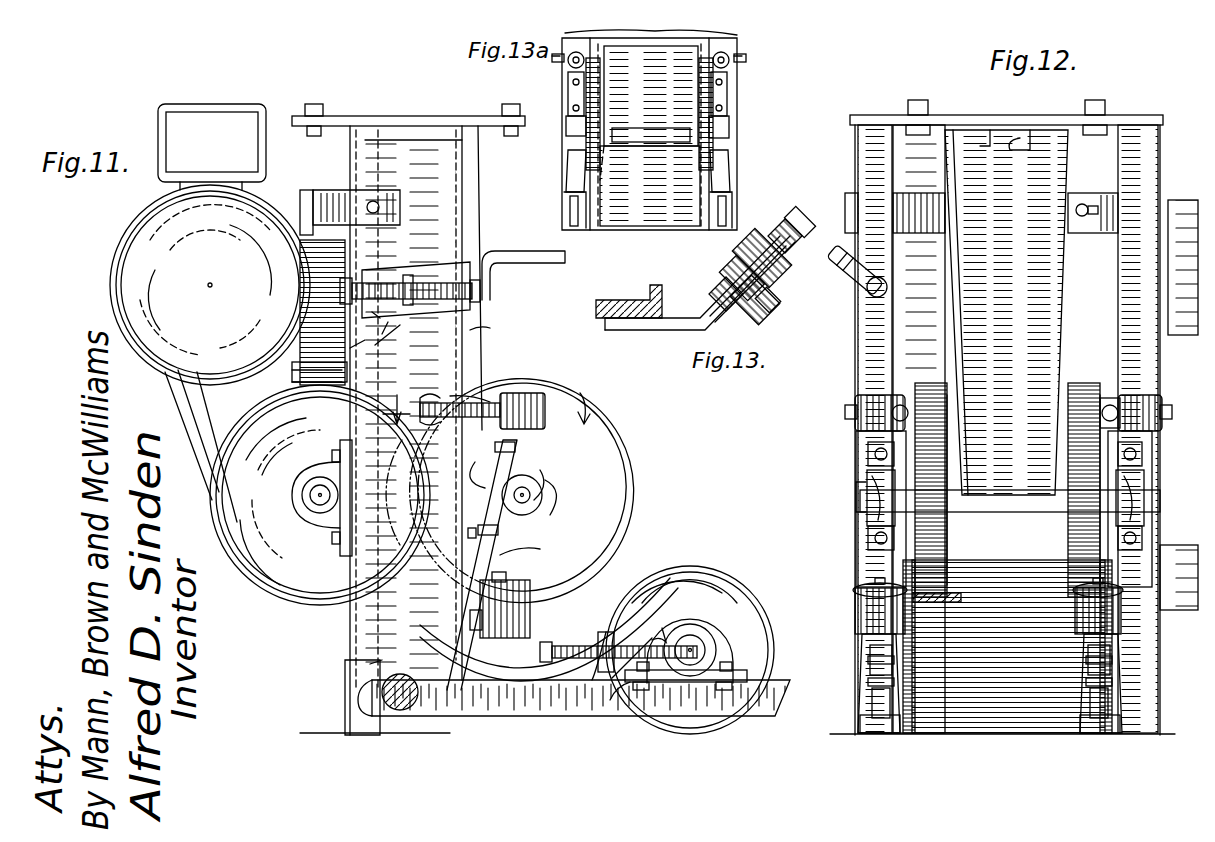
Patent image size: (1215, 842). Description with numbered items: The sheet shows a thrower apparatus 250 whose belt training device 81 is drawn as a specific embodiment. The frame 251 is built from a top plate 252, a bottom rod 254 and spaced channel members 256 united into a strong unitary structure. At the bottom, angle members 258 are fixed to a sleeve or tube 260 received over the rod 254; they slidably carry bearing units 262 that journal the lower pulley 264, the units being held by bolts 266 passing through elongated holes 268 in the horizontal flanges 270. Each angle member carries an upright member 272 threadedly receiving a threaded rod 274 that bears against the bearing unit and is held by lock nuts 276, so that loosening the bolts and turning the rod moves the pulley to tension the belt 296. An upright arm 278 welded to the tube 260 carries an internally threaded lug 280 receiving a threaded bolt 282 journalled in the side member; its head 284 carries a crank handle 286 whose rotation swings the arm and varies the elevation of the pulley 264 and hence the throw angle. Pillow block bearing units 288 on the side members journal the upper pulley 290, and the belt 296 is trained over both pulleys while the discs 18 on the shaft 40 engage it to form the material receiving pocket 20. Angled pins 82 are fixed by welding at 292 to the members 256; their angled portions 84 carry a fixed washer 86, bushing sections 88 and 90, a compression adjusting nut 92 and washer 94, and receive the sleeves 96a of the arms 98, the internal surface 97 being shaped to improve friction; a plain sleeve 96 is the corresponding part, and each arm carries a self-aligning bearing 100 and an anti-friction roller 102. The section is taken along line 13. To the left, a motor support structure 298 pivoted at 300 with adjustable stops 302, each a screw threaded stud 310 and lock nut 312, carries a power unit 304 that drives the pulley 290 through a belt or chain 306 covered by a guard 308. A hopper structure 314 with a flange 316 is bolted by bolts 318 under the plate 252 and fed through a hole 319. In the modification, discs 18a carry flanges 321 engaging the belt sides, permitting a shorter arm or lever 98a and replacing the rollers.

In FIG. 11, the section line 13 is at (493, 403).
In FIG. 11, the discs or wheels 18 is at (612, 445).
In FIG. 12, the discs or wheels 18 is at (935, 410).
In FIG. 13A, the modified discs 18a is at (675, 84).
In FIG. 11, the material receiving pocket 20 is at (582, 568).
In FIG. 11, the shaft 40 is at (530, 495).
In FIG. 12, the shaft 40 is at (995, 496).
In FIG. 11, the belt training device 81 is at (509, 547).
In FIG. 11, the angled pins 82 is at (470, 396).
In FIG. 13A, the angled pins 82 is at (554, 60).
In FIG. 13, the angled pins 82 is at (688, 331).
In FIG. 12, the angled pins 82 is at (842, 406).
In FIG. 11, the angled pin portions 84 is at (482, 404).
In FIG. 13, the angled pin portions 84 is at (734, 316).
In FIG. 13, the fixed washer 86 is at (709, 280).
In FIG. 13, the bushing section 88 is at (738, 264).
In FIG. 13, the bushing section 90 is at (756, 238).
In FIG. 13, the compression adjusting nut 92 is at (781, 232).
In FIG. 12, the compression adjusting nut 92 is at (900, 402).
In FIG. 13, the washer 94 is at (808, 264).
In FIG. 13A, the sleeve 96 is at (562, 62).
In FIG. 12, the sleeve 96 is at (1134, 394).
In FIG. 11, the sleeves 96a is at (532, 394).
In FIG. 13, the sleeves 96a is at (764, 308).
In FIG. 12, the sleeves 96a is at (867, 395).
In FIG. 13, the internal surface 97 is at (774, 292).
In FIG. 11, the arms or levers 98 is at (568, 504).
In FIG. 12, the arms or levers 98 is at (860, 450).
In FIG. 13A, the shorter arm or lever 98a is at (566, 140).
In FIG. 11, the self-aligning bearing 100 is at (528, 489).
In FIG. 13A, the self-aligning bearing 100 is at (730, 110).
In FIG. 12, the self-aligning bearing 100 is at (866, 482).
In FIG. 11, the anti-friction roller 102 is at (509, 591).
In FIG. 12, the anti-friction roller 102 is at (863, 584).
In FIG. 11, the apparatus 250 is at (199, 87).
In FIG. 12, the frame 251 is at (882, 104).
In FIG. 12, the top plate 252 is at (1150, 120).
In FIG. 11, the bottom rod 254 is at (405, 705).
In FIG. 13A, the channel members 256 is at (710, 52).
In FIG. 12, the channel members 256 is at (880, 174).
In FIG. 11, the angle members 258 is at (468, 715).
In FIG. 13A, the angle members 258 is at (560, 198).
In FIG. 12, the angle members 258 is at (860, 740).
In FIG. 11, the sleeve or tube 260 is at (392, 690).
In FIG. 11, the bearing units 262 is at (724, 654).
In FIG. 13A, the bearing units 262 is at (732, 172).
In FIG. 12, the bearing units 262 is at (862, 660).
In FIG. 11, the pulley 264 is at (702, 638).
In FIG. 12, the pulley 264 is at (913, 742).
In FIG. 11, the bolts 266 is at (742, 668).
In FIG. 12, the bolts 266 is at (953, 636).
In FIG. 11, the elongated holes 268 is at (750, 672).
In FIG. 12, the elongated holes 268 is at (862, 670).
In FIG. 12, the horizontal flanges 270 is at (876, 720).
In FIG. 11, the upright member 272 is at (600, 676).
In FIG. 11, the threaded rod 274 is at (636, 638).
In FIG. 11, the lock nuts 276 is at (592, 642).
In FIG. 11, the upright arm 278 is at (408, 316).
In FIG. 11, the internally screw threaded lug 280 is at (410, 276).
In FIG. 11, the threaded bolt 282 is at (440, 288).
In FIG. 11, the bolt head 284 is at (483, 290).
In FIG. 11, the crank handle 286 is at (566, 260).
In FIG. 12, the crank handle 286 is at (868, 276).
In FIG. 11, the pillow block bearing units 288 is at (300, 508).
In FIG. 11, the pulley 290 is at (264, 476).
In FIG. 11, the weld 292 is at (476, 350).
In FIG. 13, the weld 292 is at (636, 305).
In FIG. 11, the belt 296 is at (678, 566).
In FIG. 13A, the belt 296 is at (670, 186).
In FIG. 12, the belt 296 is at (984, 700).
In FIG. 11, the motor support structure 298 is at (335, 202).
In FIG. 11, the pivot 300 is at (378, 206).
In FIG. 12, the pivot 300 is at (850, 202).
In FIG. 11, the adjustable stop 302 is at (348, 382).
In FIG. 11, the power unit 304 is at (150, 244).
In FIG. 11, the pulley belt or chain 306 is at (200, 414).
In FIG. 11, the guard 308 is at (170, 387).
In FIG. 12, the guard 308 is at (1183, 588).
In FIG. 11, the screw threaded stud 310 is at (400, 302).
In FIG. 11, the lock nut 312 is at (308, 318).
In FIG. 13A, the hopper structure 314 is at (650, 36).
In FIG. 12, the hopper structure 314 is at (952, 121).
In FIG. 11, the flange 316 is at (330, 122).
In FIG. 12, the flange 316 is at (1038, 130).
In FIG. 11, the bolts 318 is at (313, 104).
In FIG. 12, the bolts 318 is at (1099, 112).
In FIG. 12, the hole 319 is at (1000, 115).
In FIG. 13A, the flanges 321 is at (716, 100).